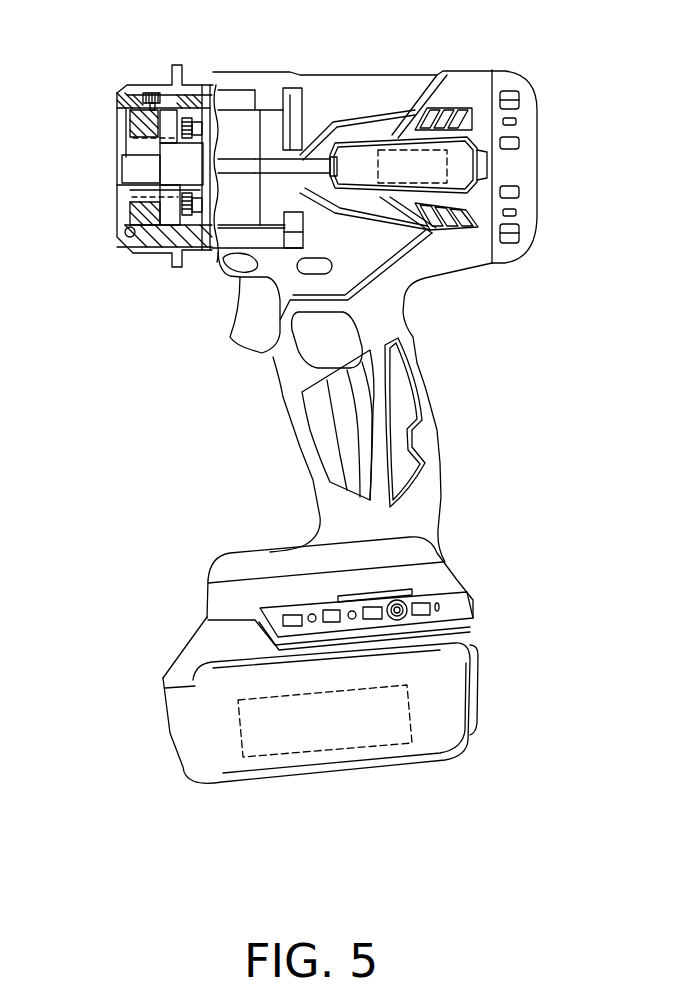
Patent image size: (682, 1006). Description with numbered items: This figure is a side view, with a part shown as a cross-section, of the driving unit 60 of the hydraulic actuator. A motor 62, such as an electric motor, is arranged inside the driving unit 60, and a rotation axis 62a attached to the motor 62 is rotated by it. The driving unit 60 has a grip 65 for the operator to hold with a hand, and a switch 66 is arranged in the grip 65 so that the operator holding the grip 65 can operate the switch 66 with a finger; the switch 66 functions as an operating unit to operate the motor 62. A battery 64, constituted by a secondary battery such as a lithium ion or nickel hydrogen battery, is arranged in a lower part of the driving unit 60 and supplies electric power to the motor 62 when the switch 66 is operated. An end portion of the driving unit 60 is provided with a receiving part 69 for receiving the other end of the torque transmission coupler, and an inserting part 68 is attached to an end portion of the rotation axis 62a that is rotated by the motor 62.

The driving unit 60 is at (578, 110).
The motor 62 is at (373, 160).
The rotation axis 62a is at (273, 168).
The battery 64 is at (332, 752).
The grip 65 is at (438, 447).
The switch 66 is at (233, 307).
The inserting part 68 is at (135, 167).
The receiving part 69 is at (152, 257).